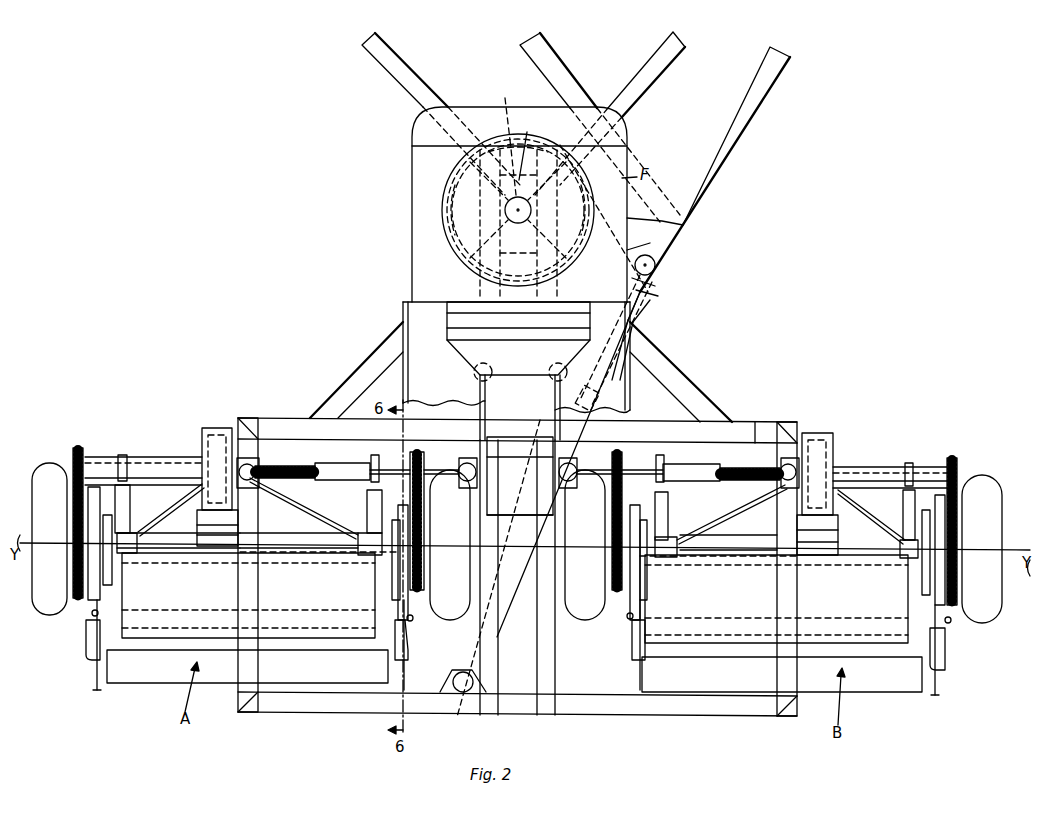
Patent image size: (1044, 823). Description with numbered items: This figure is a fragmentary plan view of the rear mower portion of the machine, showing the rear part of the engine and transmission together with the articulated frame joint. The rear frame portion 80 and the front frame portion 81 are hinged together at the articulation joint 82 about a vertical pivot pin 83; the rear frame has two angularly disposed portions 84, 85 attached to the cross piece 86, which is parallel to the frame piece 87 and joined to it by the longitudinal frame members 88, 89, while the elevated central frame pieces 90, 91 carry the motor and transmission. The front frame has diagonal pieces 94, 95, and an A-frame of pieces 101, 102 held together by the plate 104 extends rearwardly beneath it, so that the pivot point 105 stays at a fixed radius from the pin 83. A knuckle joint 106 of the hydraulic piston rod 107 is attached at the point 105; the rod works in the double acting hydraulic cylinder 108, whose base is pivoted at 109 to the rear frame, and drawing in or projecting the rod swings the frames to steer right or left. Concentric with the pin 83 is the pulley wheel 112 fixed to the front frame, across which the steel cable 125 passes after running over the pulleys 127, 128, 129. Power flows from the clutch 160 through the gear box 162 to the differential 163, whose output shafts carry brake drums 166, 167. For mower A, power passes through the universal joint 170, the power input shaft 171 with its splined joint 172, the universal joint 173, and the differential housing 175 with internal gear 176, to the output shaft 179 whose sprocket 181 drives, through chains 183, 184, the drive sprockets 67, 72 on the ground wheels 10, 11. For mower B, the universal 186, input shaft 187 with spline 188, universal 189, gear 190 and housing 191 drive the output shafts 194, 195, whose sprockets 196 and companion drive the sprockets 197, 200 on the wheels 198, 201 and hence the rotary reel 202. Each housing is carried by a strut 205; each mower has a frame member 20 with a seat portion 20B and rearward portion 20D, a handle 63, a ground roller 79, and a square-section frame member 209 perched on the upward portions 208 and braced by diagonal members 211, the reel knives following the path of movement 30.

The ground wheel 10 is at (50, 470).
The ground wheel 11 is at (446, 618).
The frame member 20 is at (122, 458).
The seat portion 20B is at (86, 652).
The rearwardly extending portion 20D is at (98, 692).
The path of movement of the rotary reel 30 is at (246, 602).
The handle 63 is at (92, 616).
The drive sprocket 67 is at (75, 528).
The chain sprocket gear 72 is at (425, 577).
The ground roller 79 is at (157, 686).
The rear frame portion 80 is at (690, 378).
The front frame portion 81 is at (404, 87).
The articulation joint 82 is at (503, 198).
The vertical pivot pin 83 is at (530, 144).
The angularly disposed frame portion 84 is at (352, 384).
The angularly disposed frame portion 85 is at (705, 402).
The cross piece 86 is at (753, 420).
The frame piece 87 is at (643, 718).
The longitudinal frame member 88 is at (258, 660).
The longitudinal frame member 89 is at (797, 671).
The central frame piece 90 is at (494, 681).
The central frame piece 91 is at (553, 681).
The diagonal piece 94 is at (406, 62).
The diagonal piece 95 is at (660, 73).
The A-frame piece 101 is at (546, 68).
The A-frame piece 102 is at (748, 120).
The plate 104 is at (665, 238).
The pivot point 105 is at (657, 268).
The knuckle joint 106 is at (655, 288).
The hydraulic piston rod 107 is at (641, 303).
The double acting hydraulic cylinder 108 is at (508, 610).
The cylinder pivot 109 is at (463, 694).
The pulley wheel 112 is at (501, 136).
The steel cable 125 is at (575, 262).
The pulley 127 is at (478, 558).
The pulley 128 is at (588, 395).
The pulley 129 is at (474, 372).
The clutch 160 is at (446, 340).
The gear box 162 is at (503, 417).
The differential 163 is at (500, 590).
The brake drum 166 is at (520, 476).
The brake drum 167 is at (547, 468).
The universal joint 170 is at (465, 479).
The mowing unit power input shaft 171 is at (356, 466).
The splined joint 172 is at (312, 458).
The universal joint 173 is at (252, 464).
The mower unit differential housing 175 is at (240, 458).
The internal gear 176 is at (204, 430).
The mowing unit power output shaft 179 is at (176, 458).
The chain sprocket 181 is at (76, 450).
The chain 183 is at (76, 500).
The chain 184 is at (421, 460).
The universal joint 186 is at (590, 490).
The mowing unit power input shaft 187 is at (688, 466).
The spline 188 is at (745, 481).
The universal joint 189 is at (798, 458).
The gear 190 is at (834, 448).
The unit B differential housing 191 is at (830, 434).
The mower unit power output shaft 194 is at (890, 466).
The mower unit power output shaft 195 is at (730, 520).
The sprocket 196 is at (958, 466).
The sprocket 197 is at (958, 553).
The ground wheel 198 is at (990, 482).
The sprocket 200 is at (610, 572).
The ground wheel 201 is at (587, 620).
The rotary reel 202 is at (735, 645).
The strut 205 is at (132, 500).
The upwardly extending portion 208 is at (392, 574).
The frame member of square section 209 is at (324, 553).
The diagonal member 211 is at (181, 540).